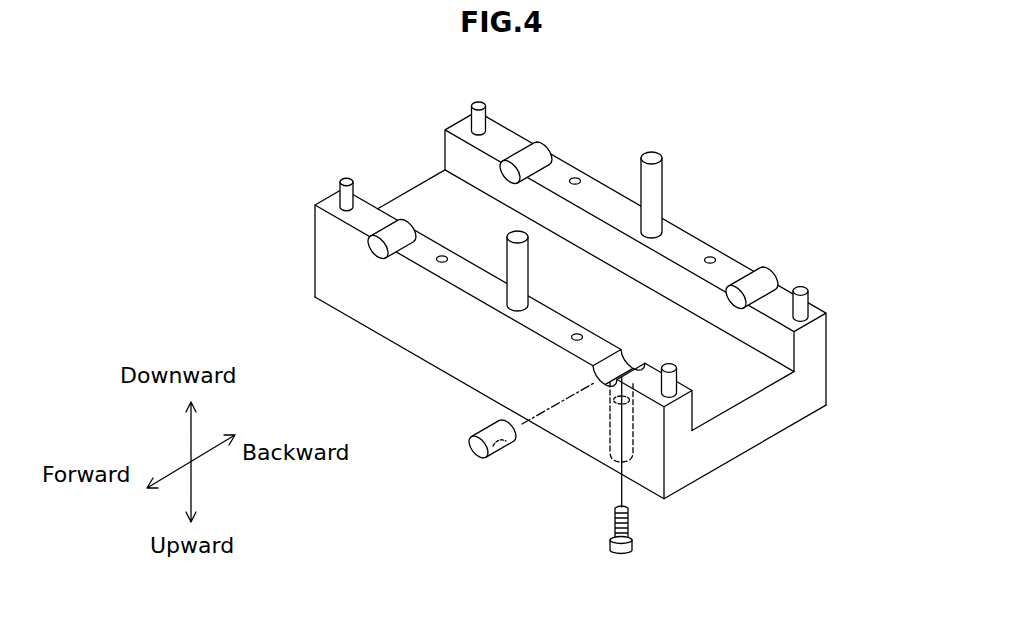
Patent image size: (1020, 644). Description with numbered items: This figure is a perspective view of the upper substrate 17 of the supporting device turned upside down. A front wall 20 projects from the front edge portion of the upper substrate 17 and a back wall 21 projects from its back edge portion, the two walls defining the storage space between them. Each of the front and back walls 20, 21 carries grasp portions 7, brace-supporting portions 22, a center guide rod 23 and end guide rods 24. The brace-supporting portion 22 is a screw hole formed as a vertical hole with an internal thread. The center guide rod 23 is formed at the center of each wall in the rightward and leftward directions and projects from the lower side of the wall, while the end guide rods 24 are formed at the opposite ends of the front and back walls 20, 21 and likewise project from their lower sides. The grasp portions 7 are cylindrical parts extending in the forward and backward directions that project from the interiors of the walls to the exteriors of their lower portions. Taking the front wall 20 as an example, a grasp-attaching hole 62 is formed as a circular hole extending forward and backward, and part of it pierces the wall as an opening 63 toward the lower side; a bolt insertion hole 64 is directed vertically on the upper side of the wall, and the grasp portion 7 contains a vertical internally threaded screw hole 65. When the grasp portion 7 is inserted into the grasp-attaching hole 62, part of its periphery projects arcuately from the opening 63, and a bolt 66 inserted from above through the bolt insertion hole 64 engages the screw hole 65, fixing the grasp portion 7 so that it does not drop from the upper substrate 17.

The grasp portion 7 is at (538, 148).
The upper substrate 17 is at (743, 447).
The front wall 20 is at (678, 417).
The back wall 21 is at (818, 324).
The brace-supporting portion 22 is at (579, 179).
The center guide rod 23 is at (662, 187).
The end guide rod 24 is at (341, 192).
The grasp-attaching hole 62 is at (614, 388).
The opening 63 is at (603, 365).
The bolt insertion hole 64 is at (618, 384).
The screw hole 65 is at (503, 449).
The bolt 66 is at (636, 546).